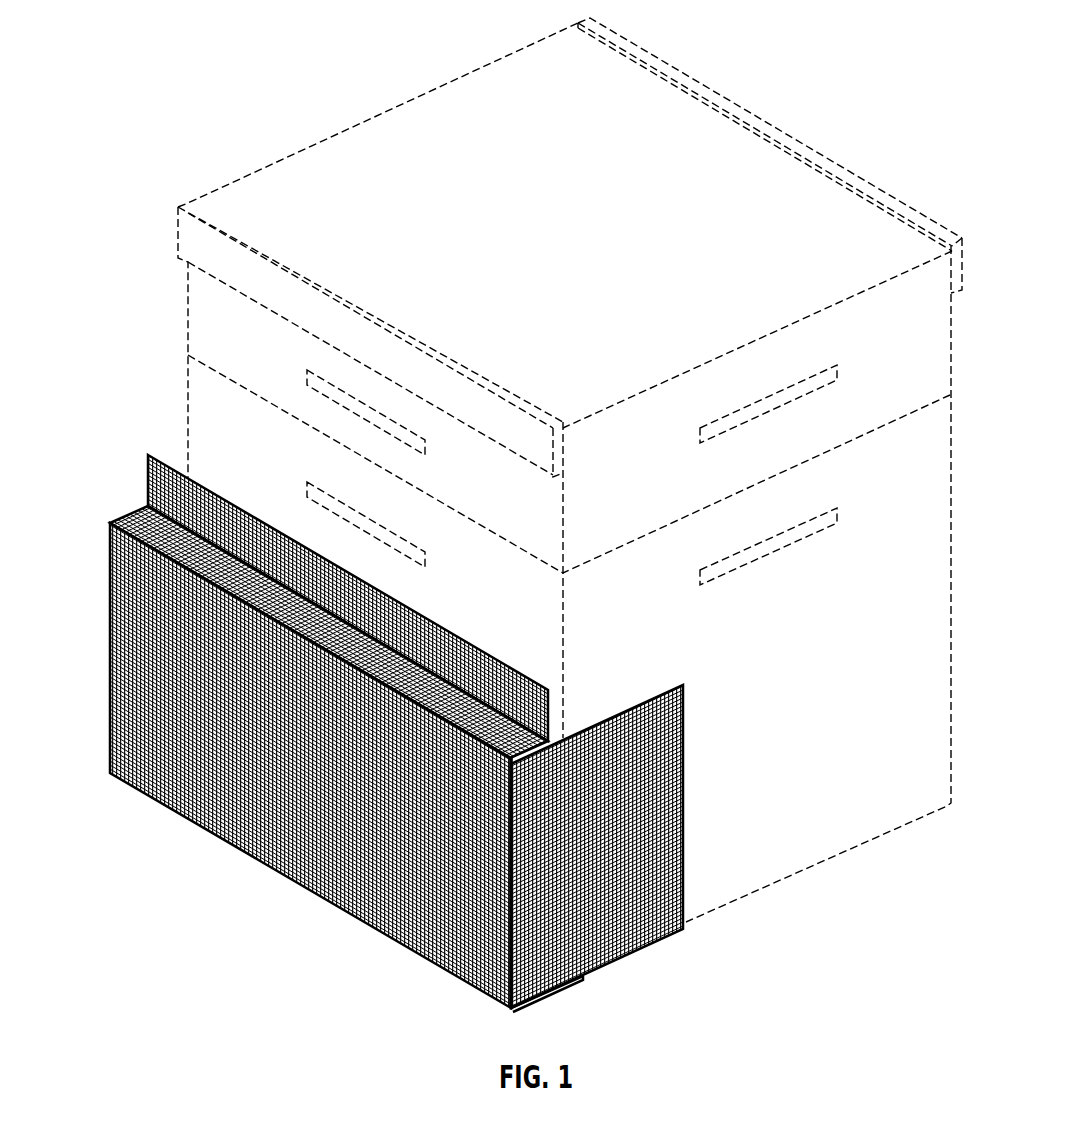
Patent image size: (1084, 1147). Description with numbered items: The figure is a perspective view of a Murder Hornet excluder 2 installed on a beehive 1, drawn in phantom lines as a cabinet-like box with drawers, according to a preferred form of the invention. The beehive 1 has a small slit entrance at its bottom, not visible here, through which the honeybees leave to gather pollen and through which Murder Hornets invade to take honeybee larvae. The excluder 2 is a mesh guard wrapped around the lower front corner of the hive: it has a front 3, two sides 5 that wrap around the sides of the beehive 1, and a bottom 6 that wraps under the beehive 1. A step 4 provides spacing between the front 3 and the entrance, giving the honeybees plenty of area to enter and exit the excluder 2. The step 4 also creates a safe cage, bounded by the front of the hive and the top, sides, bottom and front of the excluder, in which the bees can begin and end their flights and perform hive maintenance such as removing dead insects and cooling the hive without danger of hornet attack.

The beehive 1 is at (438, 172).
The Murder Hornet excluder 2 is at (442, 678).
The front 3 is at (462, 947).
The step 4 is at (118, 513).
The sides 5 is at (673, 913).
The bottom 6 is at (555, 998).